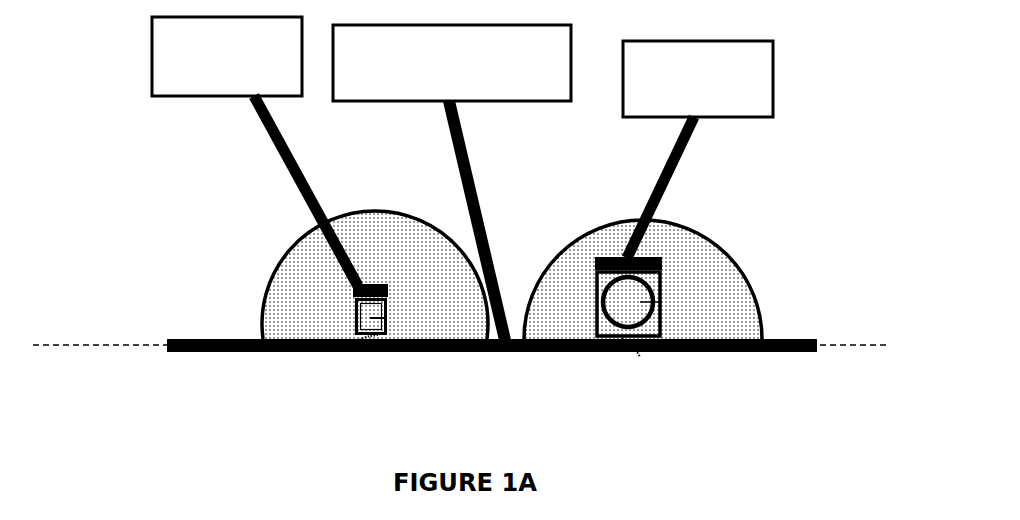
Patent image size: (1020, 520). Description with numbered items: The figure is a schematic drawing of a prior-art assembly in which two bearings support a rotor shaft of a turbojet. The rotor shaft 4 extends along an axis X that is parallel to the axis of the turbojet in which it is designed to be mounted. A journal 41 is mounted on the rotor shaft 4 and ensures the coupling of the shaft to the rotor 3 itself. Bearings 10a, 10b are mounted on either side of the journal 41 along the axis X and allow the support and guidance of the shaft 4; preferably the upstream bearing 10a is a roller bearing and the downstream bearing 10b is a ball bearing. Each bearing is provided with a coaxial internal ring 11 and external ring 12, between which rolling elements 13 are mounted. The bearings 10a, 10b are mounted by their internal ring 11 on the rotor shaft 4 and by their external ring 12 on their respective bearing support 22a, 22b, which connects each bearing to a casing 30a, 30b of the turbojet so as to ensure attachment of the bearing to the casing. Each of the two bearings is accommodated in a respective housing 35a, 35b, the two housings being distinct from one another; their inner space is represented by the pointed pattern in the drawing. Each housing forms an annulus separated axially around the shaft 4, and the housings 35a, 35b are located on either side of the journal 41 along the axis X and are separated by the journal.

The rotor 3 is at (452, 63).
The rotor shaft 4 is at (703, 352).
The upstream bearing 10a is at (354, 300).
The downstream bearing 10b is at (662, 328).
The internal ring 11 is at (352, 352).
The external ring 12 is at (390, 296).
The rolling elements 13 is at (372, 318).
The bearing support 22a is at (353, 288).
The bearing support 22b is at (661, 259).
The casing 30a is at (227, 56).
The casing 30b is at (698, 79).
The housing 35a is at (375, 275).
The housing 35b is at (643, 279).
The journal 41 is at (477, 190).
The axis X is at (120, 345).